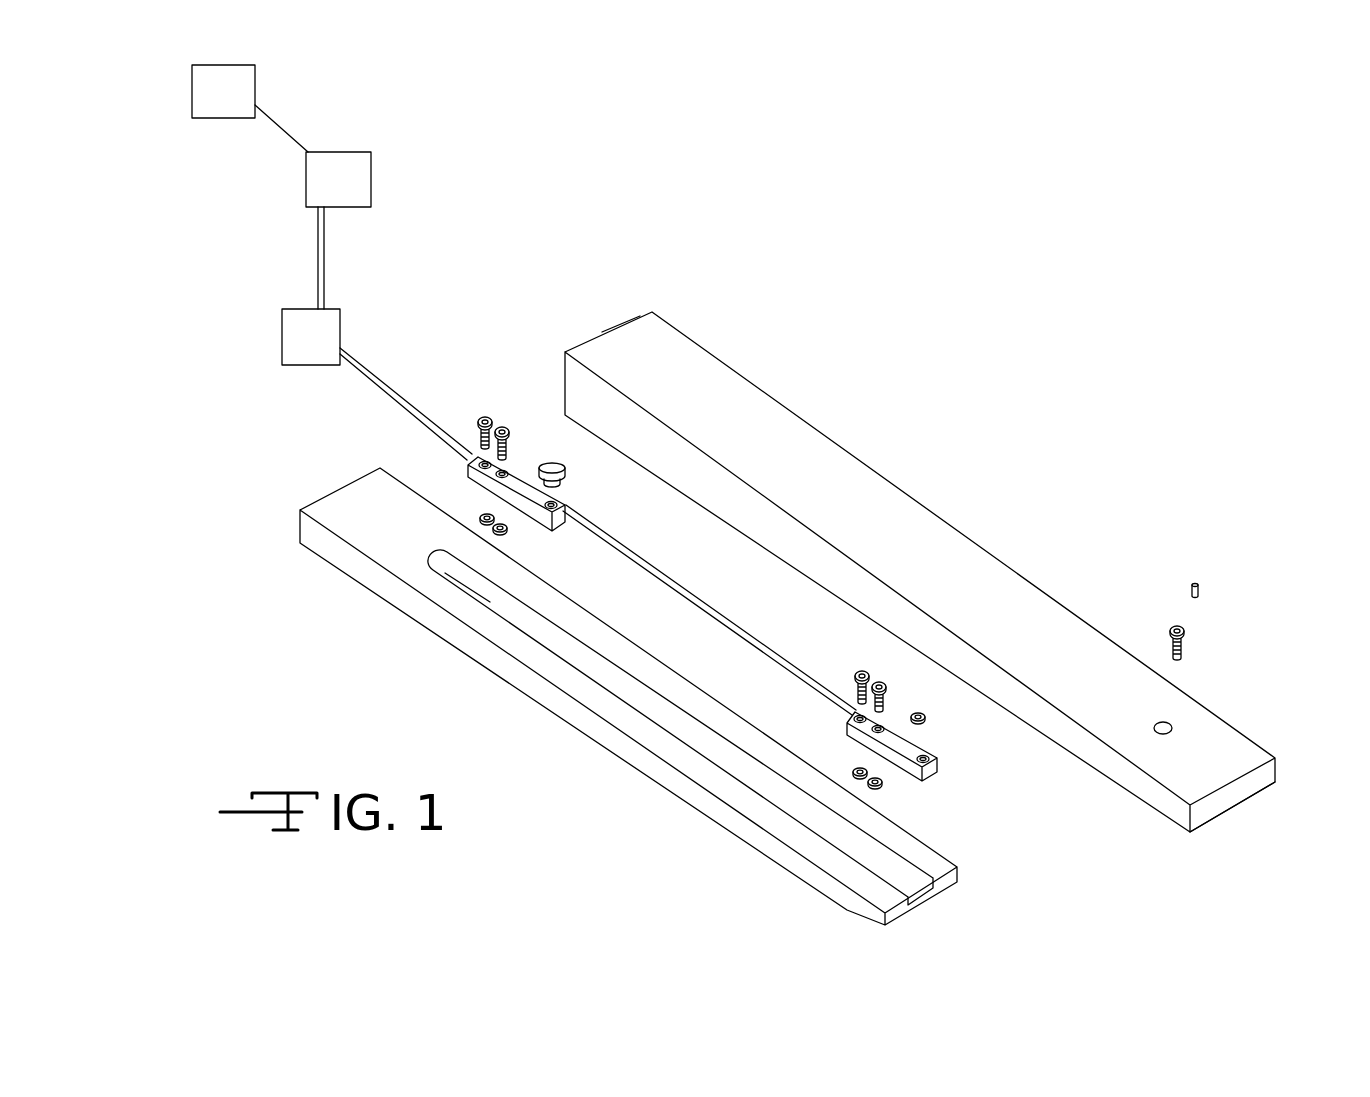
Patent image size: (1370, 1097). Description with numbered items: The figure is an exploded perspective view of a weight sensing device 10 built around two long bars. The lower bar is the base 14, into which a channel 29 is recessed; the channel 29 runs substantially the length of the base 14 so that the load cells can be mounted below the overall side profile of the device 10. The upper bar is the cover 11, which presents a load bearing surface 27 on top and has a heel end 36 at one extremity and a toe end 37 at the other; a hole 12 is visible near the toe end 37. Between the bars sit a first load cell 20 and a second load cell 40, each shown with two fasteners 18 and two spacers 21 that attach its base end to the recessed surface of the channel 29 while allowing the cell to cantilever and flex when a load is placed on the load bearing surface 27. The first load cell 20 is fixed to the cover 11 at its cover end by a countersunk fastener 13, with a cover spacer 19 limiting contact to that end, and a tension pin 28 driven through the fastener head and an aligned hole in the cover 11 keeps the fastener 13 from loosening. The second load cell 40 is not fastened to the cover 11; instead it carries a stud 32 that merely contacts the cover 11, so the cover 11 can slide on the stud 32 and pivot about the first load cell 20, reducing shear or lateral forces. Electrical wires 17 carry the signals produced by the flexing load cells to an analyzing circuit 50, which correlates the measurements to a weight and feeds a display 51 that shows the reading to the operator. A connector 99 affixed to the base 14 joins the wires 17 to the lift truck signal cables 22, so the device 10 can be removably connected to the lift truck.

The device 10 is at (1058, 332).
The cover 11 is at (729, 392).
The hole 12 is at (1163, 728).
The fastener 13 is at (1188, 632).
The base 14 is at (351, 523).
The electrical wires 17 is at (363, 377).
The fasteners 18 is at (481, 414).
The cover spacer 19 is at (925, 718).
The first load cell 20 is at (933, 770).
The spacers 21 is at (480, 514).
The lift truck signal cables 22 is at (318, 262).
The load bearing surface 27 is at (963, 610).
The tension pin 28 is at (1199, 590).
The channel 29 is at (532, 608).
The stud 32 is at (566, 470).
The heel end 36 is at (602, 332).
The toe end 37 is at (1235, 792).
The second load cell 40 is at (567, 507).
The analyzing circuit 50 is at (323, 194).
The display 51 is at (212, 109).
The connector 99 is at (297, 352).